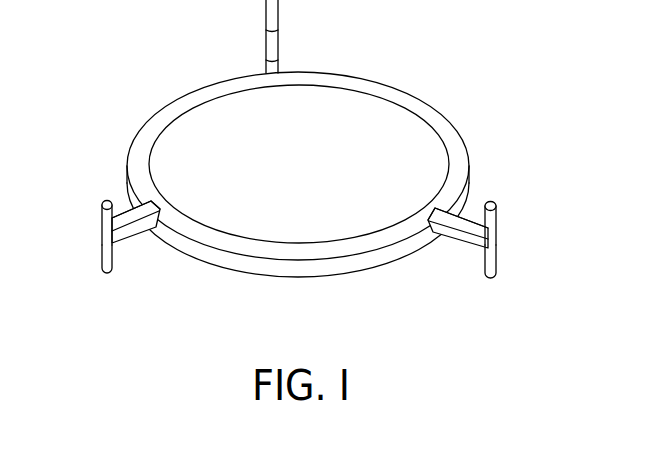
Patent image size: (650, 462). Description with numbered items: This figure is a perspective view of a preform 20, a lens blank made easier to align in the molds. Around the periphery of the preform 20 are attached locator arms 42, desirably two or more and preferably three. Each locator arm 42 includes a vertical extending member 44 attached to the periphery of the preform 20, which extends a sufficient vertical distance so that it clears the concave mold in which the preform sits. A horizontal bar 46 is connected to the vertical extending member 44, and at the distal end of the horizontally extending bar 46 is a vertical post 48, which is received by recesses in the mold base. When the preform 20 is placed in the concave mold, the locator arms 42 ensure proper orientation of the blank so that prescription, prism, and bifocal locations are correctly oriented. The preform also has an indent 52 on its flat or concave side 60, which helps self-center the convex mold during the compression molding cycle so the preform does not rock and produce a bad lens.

The preform 20 is at (303, 326).
The locator arms 42 is at (300, 170).
The vertical extending member 44 is at (305, 212).
The horizontal bar 46 is at (126, 210).
The vertical post 48 is at (102, 257).
The indent 52 is at (371, 122).
The flat or concave side 60 is at (448, 138).